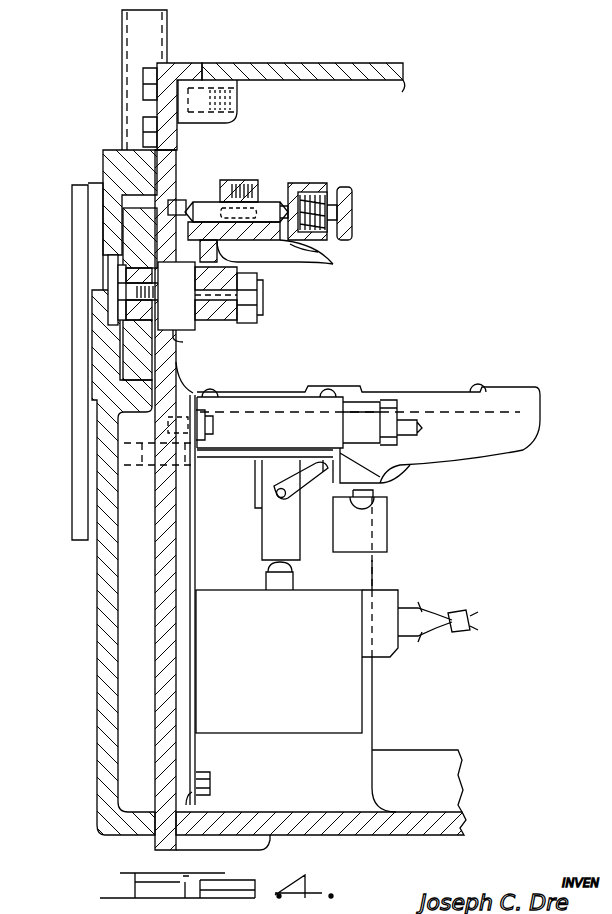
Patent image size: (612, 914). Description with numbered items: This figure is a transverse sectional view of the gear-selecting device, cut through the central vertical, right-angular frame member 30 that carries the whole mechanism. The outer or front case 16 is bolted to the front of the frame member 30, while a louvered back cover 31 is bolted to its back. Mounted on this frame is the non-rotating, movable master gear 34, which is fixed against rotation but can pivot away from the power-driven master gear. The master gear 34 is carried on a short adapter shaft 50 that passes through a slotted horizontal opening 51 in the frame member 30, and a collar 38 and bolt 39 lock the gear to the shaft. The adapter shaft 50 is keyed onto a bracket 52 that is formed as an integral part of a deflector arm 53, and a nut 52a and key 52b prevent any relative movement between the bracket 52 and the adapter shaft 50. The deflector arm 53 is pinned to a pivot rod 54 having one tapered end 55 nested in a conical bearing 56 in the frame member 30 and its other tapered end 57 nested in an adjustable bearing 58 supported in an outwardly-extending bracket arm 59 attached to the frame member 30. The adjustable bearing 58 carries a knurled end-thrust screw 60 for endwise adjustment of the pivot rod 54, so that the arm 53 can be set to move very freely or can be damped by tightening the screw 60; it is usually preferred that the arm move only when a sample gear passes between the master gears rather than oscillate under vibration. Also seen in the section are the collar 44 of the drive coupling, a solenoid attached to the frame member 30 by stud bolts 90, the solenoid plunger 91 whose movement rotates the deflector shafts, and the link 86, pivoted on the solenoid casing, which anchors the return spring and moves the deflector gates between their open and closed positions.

The outer case 16 is at (78, 185).
The louvered back cover 31 is at (370, 44).
The conical bearing 56 is at (178, 205).
The movable master gear 34 is at (130, 350).
The collar 38 is at (110, 262).
The bolt 39 is at (102, 285).
The frame member 30 is at (176, 372).
The adapter shaft 50 is at (192, 322).
The slotted horizontal opening 51 is at (183, 342).
The bracket 52 is at (250, 253).
The nut 52a is at (232, 311).
The key 52b is at (264, 292).
The deflector arm 53 is at (256, 190).
The pivot rod 54 is at (262, 212).
The tapered end 55 is at (212, 186).
The tapered end 57 is at (289, 246).
The adjustable bearing 58 is at (306, 195).
The bracket arm 59 is at (324, 200).
The knurled end-thrust screw 60 is at (354, 210).
The collar 44 is at (520, 428).
The stud bolt 90 is at (406, 434).
The solenoid plunger 91 is at (272, 531).
The link 86 is at (270, 576).